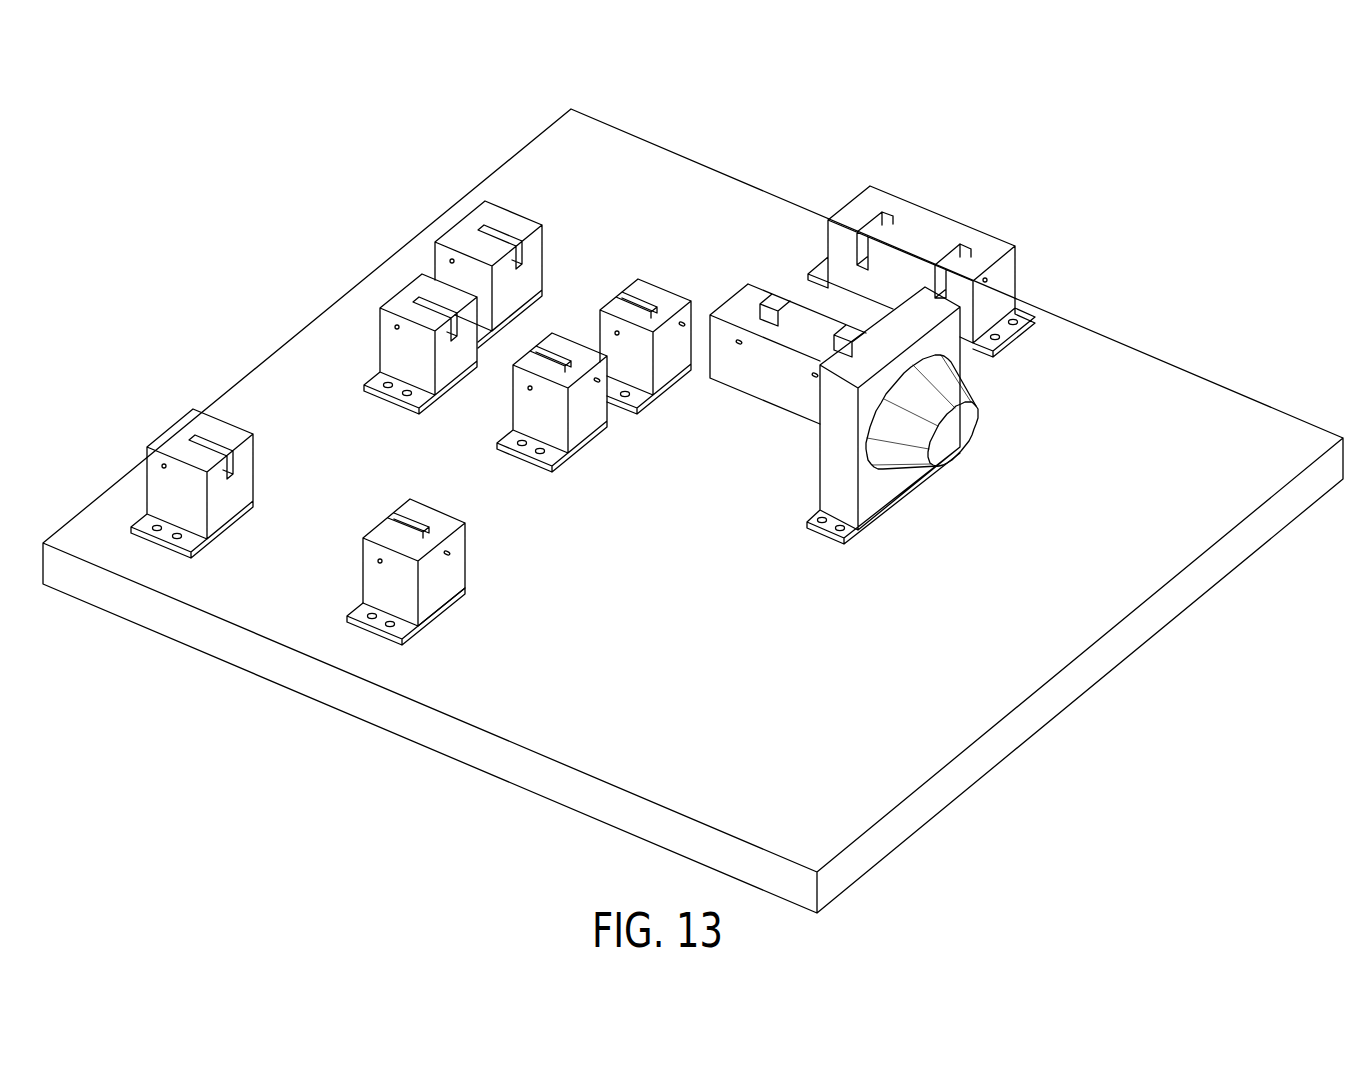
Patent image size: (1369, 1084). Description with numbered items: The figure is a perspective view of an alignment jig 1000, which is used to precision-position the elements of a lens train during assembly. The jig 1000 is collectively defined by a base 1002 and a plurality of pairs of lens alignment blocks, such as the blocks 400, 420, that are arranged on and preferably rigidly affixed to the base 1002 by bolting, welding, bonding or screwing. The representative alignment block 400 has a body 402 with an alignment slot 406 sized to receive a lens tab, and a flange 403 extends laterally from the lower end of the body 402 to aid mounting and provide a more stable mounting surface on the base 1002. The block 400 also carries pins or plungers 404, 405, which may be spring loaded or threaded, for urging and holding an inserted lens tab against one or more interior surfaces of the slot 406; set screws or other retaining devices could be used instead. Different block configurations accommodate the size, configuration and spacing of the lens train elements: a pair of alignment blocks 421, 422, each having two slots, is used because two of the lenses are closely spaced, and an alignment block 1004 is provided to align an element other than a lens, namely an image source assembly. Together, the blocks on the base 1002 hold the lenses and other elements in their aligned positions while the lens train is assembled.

The alignment jig 1000 is at (1143, 189).
The base 1002 is at (1222, 407).
The alignment block 400 is at (450, 501).
The body 402 is at (374, 581).
The flange 403 is at (379, 626).
The plunger 404 is at (453, 555).
The plunger 405 is at (374, 559).
The alignment slot 406 is at (391, 516).
The alignment block 420 is at (178, 437).
The alignment block 421 is at (778, 398).
The alignment block 422 is at (906, 207).
The alignment block 1004 is at (837, 492).